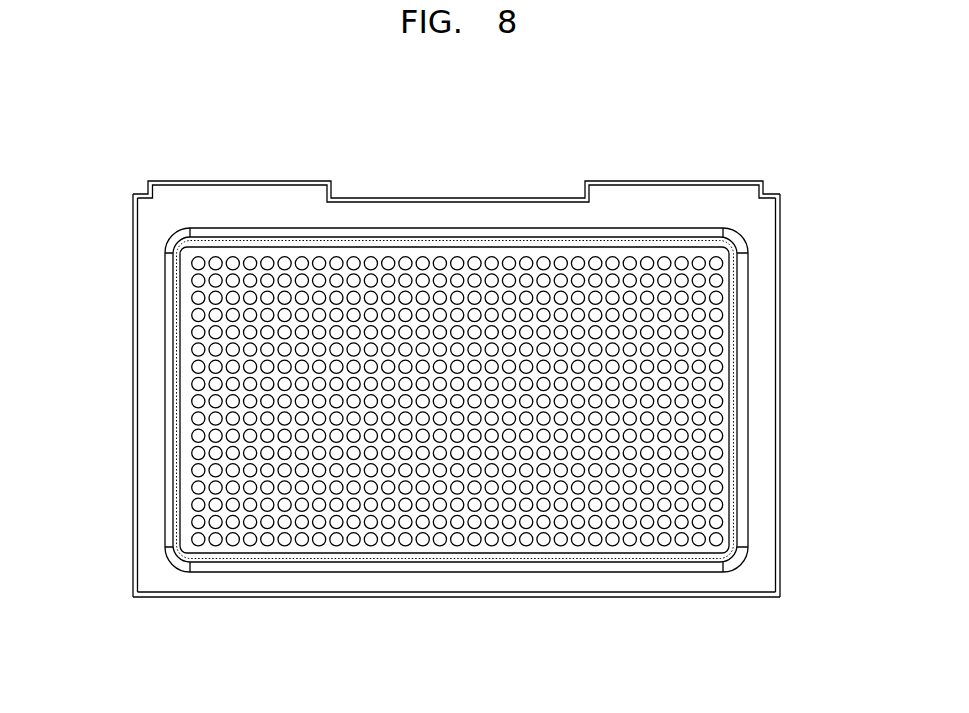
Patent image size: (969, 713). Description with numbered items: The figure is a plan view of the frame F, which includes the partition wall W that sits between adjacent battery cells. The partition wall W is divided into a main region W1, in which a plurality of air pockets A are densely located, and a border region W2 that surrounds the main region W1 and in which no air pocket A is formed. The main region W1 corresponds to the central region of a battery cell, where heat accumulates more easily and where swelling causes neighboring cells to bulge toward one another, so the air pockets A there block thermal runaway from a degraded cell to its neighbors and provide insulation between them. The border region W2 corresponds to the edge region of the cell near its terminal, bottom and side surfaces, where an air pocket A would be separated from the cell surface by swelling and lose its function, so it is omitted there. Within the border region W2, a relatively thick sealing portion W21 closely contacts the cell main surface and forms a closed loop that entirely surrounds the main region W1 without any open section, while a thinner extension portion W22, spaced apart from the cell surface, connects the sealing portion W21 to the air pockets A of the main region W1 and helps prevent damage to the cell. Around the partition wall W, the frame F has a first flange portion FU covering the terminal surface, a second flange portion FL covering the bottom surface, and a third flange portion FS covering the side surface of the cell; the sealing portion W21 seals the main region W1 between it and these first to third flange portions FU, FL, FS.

The frame F is at (457, 396).
The first flange portion FU is at (242, 182).
The second flange portion FL is at (456, 598).
The third flange portion FS is at (132, 433).
The partition wall W is at (450, 341).
The main region W1 is at (511, 398).
The border region W2 is at (429, 341).
The sealing portion W21 is at (642, 198).
The extension portion W22 is at (183, 252).
The air pocket A is at (718, 385).